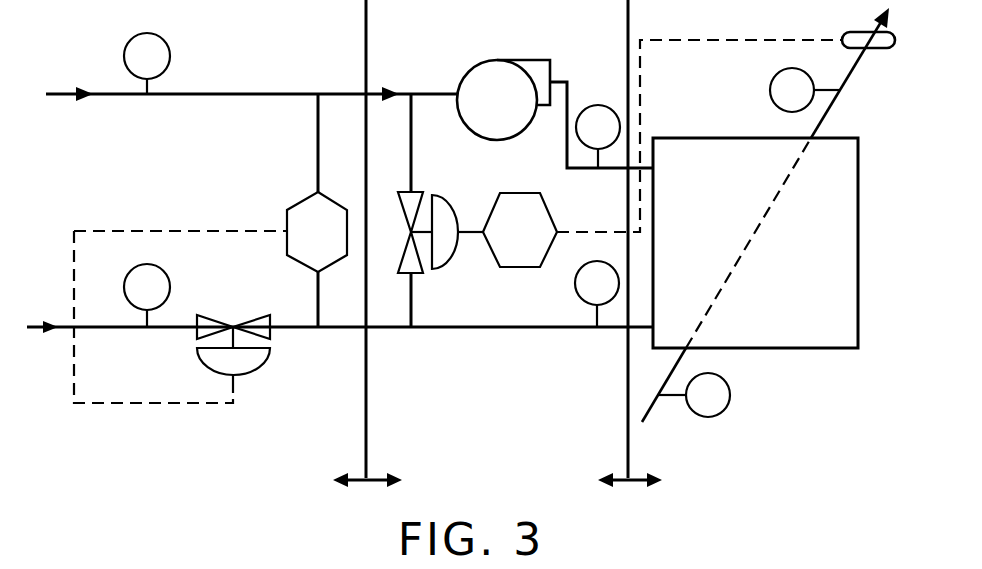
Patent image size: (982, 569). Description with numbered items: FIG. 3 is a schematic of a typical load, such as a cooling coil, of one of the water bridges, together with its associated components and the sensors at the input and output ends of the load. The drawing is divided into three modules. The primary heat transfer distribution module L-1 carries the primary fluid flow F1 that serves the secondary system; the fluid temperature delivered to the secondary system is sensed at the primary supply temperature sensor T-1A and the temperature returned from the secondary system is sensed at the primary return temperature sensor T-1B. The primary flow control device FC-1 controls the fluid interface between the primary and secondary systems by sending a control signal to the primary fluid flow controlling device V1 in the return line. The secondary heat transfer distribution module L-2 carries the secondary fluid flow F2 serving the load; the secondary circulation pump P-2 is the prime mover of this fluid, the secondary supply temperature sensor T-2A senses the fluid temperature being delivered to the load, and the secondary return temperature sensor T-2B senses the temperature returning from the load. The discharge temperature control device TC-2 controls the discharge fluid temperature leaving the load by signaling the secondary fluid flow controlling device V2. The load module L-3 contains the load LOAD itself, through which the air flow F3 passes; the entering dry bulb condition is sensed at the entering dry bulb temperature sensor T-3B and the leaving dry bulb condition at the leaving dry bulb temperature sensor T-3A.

The primary supply fluid temperature sensor T-1A is at (147, 63).
The primary return fluid temperature sensor T-1B is at (147, 295).
The primary flow control device FC-1 is at (317, 232).
The primary fluid flow controlling device V1 is at (233, 354).
The secondary fluid flow controlling device V2 is at (440, 232).
The discharge temperature control device TC-2 is at (520, 230).
The secondary circulation pump P-2 is at (503, 100).
The secondary supply fluid temperature sensor T-2A is at (598, 136).
The secondary return fluid temperature sensor T-2B is at (597, 294).
The load LOAD is at (755, 243).
The leaving dry bulb temperature sensor T-3A is at (805, 90).
The entering dry bulb temperature sensor T-3B is at (694, 395).
The primary fluid flow F1 is at (34, 333).
The secondary fluid flow F2 is at (490, 329).
The air flow F3 is at (642, 422).
The primary heat transfer distribution module L-1 is at (166, 457).
The secondary heat transfer distribution module L-2 is at (484, 458).
The load module L-3 is at (730, 458).